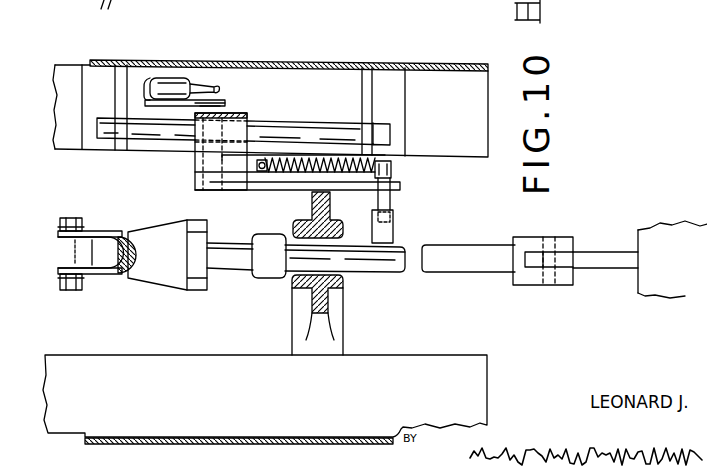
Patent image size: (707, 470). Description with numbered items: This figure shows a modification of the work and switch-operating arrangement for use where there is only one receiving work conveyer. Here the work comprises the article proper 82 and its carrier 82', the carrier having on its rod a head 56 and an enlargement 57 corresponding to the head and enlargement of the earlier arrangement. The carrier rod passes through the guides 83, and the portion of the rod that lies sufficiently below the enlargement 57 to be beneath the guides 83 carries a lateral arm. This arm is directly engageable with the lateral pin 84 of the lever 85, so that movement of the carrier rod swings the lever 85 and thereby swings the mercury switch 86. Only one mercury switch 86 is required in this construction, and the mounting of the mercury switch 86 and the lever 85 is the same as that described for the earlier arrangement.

The head 56 is at (185, 237).
The enlargement 57 is at (263, 237).
The article proper 82 is at (640, 247).
The carrier 82' is at (497, 284).
The guides 83 is at (343, 282).
The lateral pin 84 is at (387, 203).
The lever 85 is at (391, 180).
The mercury switch 86 is at (167, 77).